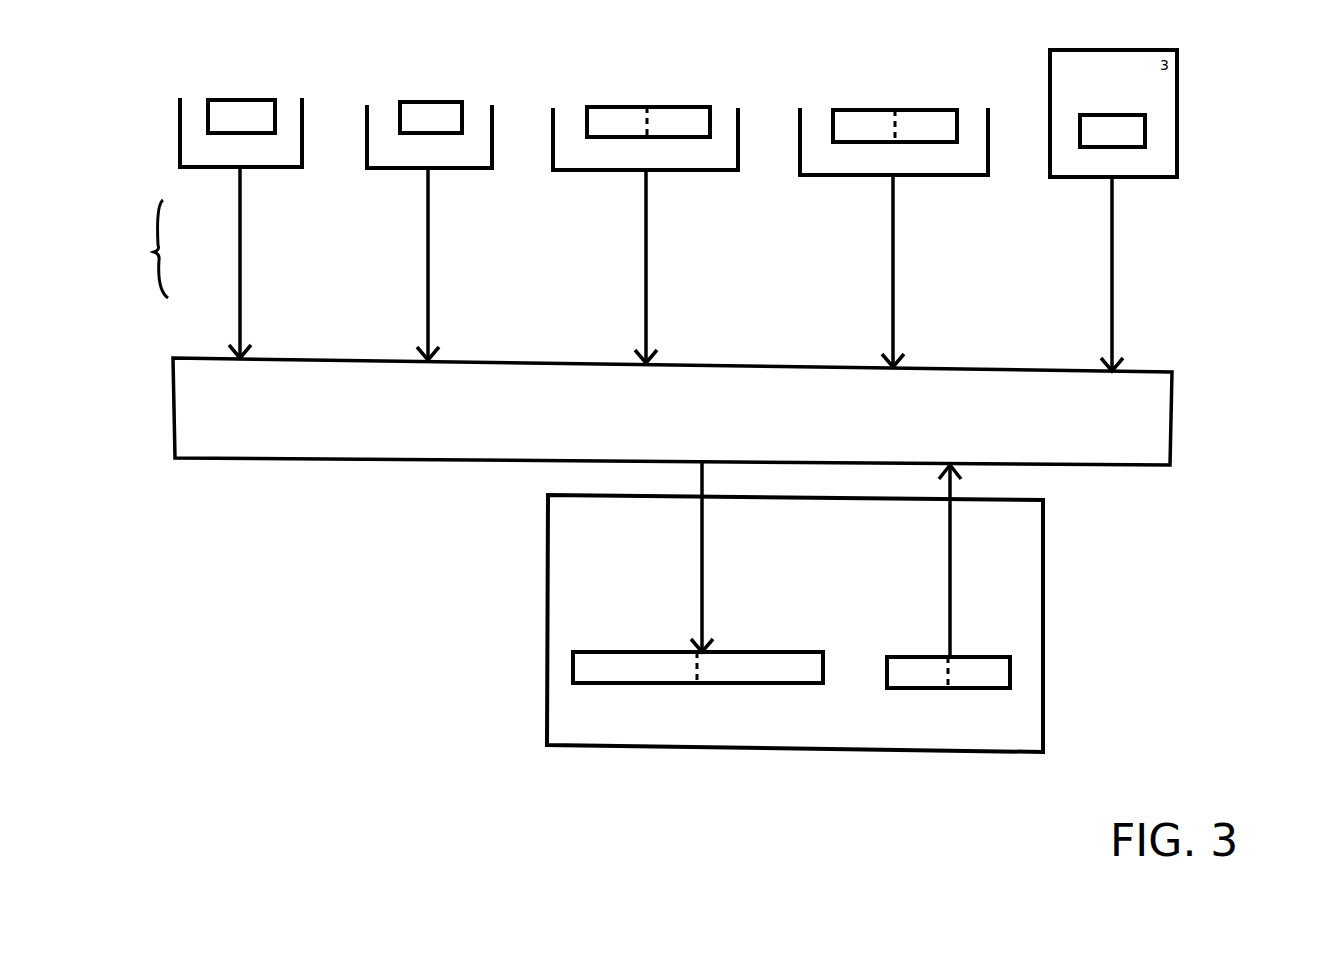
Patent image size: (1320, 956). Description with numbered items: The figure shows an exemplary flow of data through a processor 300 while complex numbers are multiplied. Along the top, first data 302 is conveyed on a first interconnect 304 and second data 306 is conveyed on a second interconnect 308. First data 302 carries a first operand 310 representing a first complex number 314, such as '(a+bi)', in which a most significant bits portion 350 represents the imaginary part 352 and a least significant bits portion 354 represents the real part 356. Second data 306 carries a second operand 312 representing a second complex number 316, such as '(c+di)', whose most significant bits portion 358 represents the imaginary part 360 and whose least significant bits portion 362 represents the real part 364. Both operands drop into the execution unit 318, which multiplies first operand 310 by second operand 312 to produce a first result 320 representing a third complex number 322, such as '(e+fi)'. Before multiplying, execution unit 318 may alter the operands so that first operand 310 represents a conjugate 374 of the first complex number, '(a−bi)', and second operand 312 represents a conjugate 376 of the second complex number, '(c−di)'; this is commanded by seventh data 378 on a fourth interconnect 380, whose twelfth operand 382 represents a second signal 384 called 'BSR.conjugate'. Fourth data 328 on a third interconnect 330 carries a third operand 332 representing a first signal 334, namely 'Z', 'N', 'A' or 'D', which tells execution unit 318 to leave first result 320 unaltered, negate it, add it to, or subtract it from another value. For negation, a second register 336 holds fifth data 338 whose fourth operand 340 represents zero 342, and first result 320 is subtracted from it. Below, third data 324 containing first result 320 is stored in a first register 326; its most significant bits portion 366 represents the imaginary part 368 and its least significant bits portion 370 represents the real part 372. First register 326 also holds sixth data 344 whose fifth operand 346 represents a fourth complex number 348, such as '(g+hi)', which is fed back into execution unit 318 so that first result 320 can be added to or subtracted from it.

The processor 300 is at (743, 401).
The first data 302 is at (704, 72).
The first interconnect 304 is at (710, 172).
The second data 306 is at (957, 74).
The second interconnect 308 is at (968, 177).
The first operand 310 is at (648, 345).
The second operand 312 is at (896, 346).
The first complex number 314 is at (548, 228).
The second complex number 316 is at (792, 230).
The execution unit 318 is at (672, 411).
The first result 320 is at (704, 633).
The third complex number 322 is at (588, 597).
The third data 324 is at (795, 646).
The first register 326 is at (980, 755).
The fourth data 328 is at (243, 96).
The third interconnect 330 is at (280, 168).
The third operand 332 is at (241, 332).
The first signal 334 is at (152, 245).
The second register 336 is at (1157, 178).
The fifth data 338 is at (1112, 110).
The fourth operand 340 is at (1114, 346).
The zero 342 is at (1075, 232).
The sixth data 344 is at (976, 647).
The fifth operand 346 is at (955, 478).
The fourth complex number 348 is at (862, 597).
The most significant bits portion of first operand 350 is at (597, 112).
The imaginary part of first complex number 352 is at (611, 247).
The least significant bits portion of first operand 354 is at (668, 115).
The real part of first complex number 356 is at (568, 247).
The most significant bits portion of second operand 358 is at (850, 118).
The imaginary part of second complex number 360 is at (855, 250).
The least significant bits portion of second operand 362 is at (915, 121).
The real part of second complex number 364 is at (820, 250).
The most significant bits portion of first result 366 is at (593, 675).
The imaginary part of first result 368 is at (645, 571).
The least significant bits portion of first result 370 is at (715, 677).
The real part of first result 372 is at (603, 580).
The conjugate of first complex number 374 is at (735, 256).
The conjugate of second complex number 376 is at (975, 268).
The seventh data 378 is at (438, 82).
The fourth interconnect 380 is at (464, 169).
The twelfth operand 382 is at (426, 332).
The second signal 384 is at (460, 310).